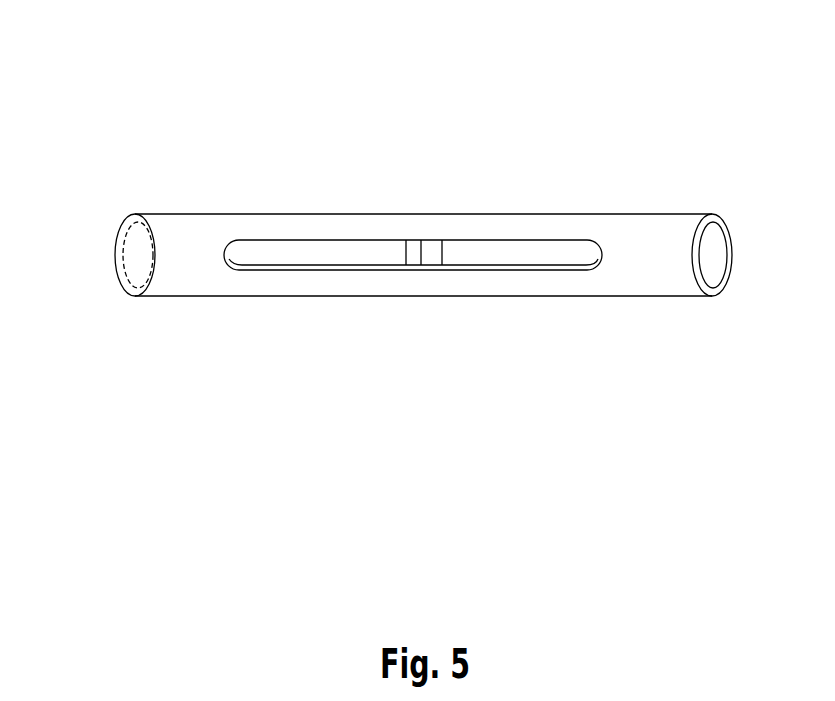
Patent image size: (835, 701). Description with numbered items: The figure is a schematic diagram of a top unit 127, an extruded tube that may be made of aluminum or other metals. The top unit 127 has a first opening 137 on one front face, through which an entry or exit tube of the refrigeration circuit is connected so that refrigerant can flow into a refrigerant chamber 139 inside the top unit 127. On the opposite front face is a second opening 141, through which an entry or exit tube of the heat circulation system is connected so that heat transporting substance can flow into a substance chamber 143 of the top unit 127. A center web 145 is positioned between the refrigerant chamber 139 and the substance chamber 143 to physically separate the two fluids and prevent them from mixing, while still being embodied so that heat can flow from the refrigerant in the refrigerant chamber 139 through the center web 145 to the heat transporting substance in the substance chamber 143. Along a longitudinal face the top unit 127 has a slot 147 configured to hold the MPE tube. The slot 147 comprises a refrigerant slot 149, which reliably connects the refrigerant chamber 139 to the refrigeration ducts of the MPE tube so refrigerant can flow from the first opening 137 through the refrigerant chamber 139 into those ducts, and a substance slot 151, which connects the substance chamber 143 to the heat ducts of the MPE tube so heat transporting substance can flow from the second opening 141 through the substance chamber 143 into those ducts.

The top unit 127 is at (472, 113).
The first opening 137 is at (711, 254).
The refrigerant chamber 139 is at (572, 257).
The second opening 141 is at (140, 256).
The substance chamber 143 is at (272, 257).
The center web 145 is at (414, 253).
The slot 147 is at (382, 253).
The refrigerant slot 149 is at (473, 253).
The substance slot 151 is at (350, 253).